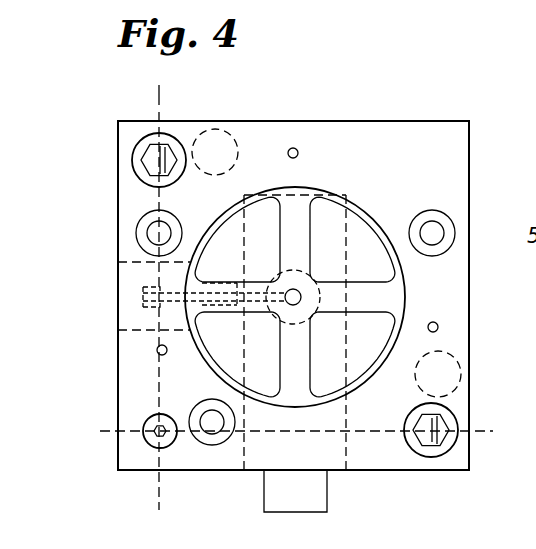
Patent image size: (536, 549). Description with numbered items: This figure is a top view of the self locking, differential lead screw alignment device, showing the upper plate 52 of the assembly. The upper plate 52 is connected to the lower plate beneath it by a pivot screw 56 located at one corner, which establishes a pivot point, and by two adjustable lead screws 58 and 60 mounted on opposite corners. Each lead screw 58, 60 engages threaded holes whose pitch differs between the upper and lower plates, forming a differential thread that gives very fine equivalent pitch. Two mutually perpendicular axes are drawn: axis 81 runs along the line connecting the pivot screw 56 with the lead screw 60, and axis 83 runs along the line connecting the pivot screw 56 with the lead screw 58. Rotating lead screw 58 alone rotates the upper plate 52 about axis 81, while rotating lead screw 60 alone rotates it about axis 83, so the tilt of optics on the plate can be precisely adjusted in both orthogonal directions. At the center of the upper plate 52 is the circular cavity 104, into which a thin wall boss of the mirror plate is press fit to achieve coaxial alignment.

The upper plate 52 is at (419, 138).
The cavity 104 is at (217, 253).
The lead screw 58 is at (143, 159).
The lead screw 60 is at (434, 438).
The screw 56 is at (153, 424).
The axis 83 is at (156, 93).
The axis 81 is at (503, 430).